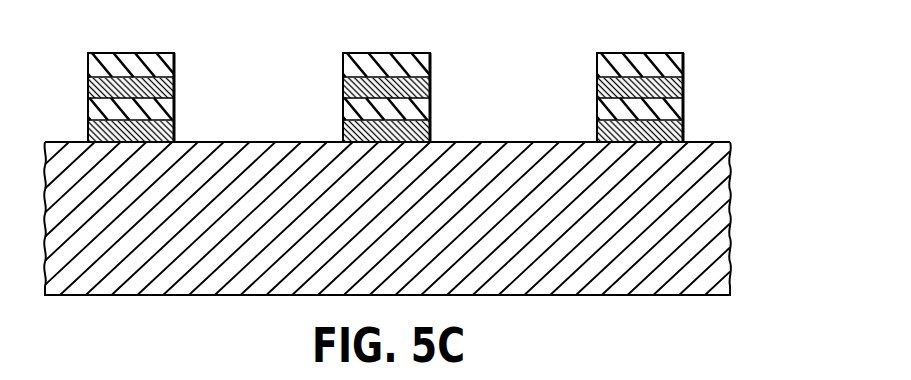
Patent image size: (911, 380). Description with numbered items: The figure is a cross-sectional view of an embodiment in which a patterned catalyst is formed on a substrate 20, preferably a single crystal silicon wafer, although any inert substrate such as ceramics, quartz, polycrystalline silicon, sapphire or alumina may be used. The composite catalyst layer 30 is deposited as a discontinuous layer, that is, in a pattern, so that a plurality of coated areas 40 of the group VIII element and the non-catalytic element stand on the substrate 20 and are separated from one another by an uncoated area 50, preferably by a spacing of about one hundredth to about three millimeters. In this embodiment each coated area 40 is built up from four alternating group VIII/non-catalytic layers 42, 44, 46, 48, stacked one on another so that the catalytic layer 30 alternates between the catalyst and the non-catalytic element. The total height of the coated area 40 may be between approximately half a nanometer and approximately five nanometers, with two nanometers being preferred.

The substrate 20 is at (730, 216).
The composite catalyst layer 30 is at (128, 53).
The coated area 40 is at (88, 55).
The first layer 42 is at (88, 130).
The second layer 44 is at (683, 105).
The third alternating layer 46 is at (88, 90).
The fourth alternating layer 48 is at (597, 63).
The uncoated area 50 is at (498, 142).